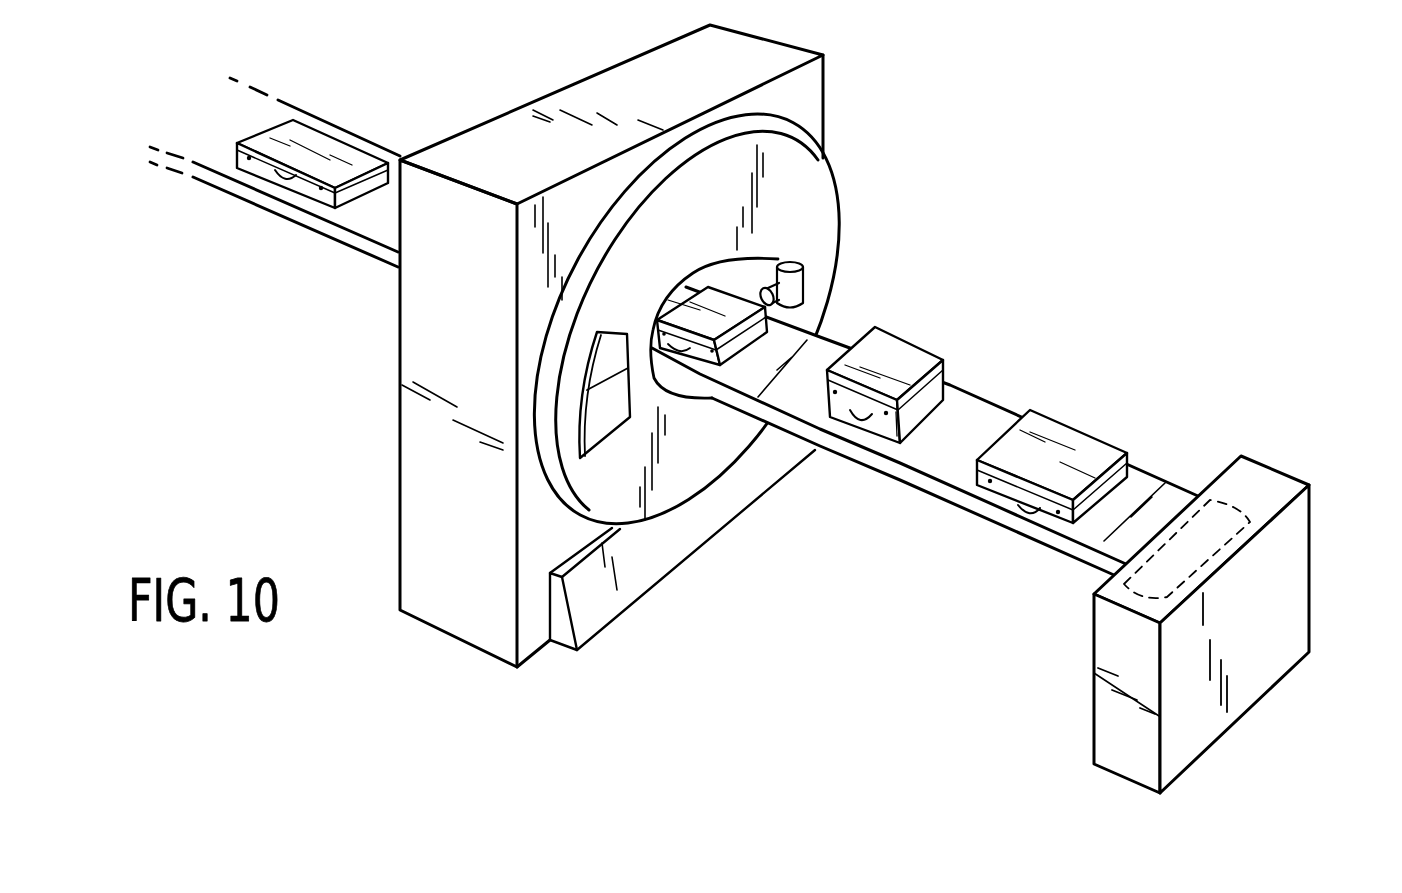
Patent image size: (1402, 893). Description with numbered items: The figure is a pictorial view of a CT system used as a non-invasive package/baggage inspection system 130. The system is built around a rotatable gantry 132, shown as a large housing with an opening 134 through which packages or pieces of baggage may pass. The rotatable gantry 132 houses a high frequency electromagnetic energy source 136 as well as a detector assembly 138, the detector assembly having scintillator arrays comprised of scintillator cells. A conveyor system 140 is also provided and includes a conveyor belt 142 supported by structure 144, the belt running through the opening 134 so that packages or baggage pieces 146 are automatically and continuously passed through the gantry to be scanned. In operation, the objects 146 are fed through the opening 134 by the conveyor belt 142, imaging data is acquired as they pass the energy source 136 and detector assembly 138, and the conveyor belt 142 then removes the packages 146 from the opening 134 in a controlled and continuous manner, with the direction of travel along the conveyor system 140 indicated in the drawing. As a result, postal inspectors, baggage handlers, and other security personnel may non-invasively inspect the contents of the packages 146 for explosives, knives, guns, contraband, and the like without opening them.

The package/baggage inspection system 130 is at (732, 409).
The rotatable gantry 132 is at (828, 205).
The opening 134 is at (716, 274).
The high frequency electromagnetic energy source 136 is at (806, 286).
The detector assembly 138 is at (600, 428).
The conveyor system 140 is at (149, 189).
The conveyor belt 142 is at (985, 395).
The structure 144 is at (1297, 585).
The packages or baggage pieces 146 is at (918, 352).